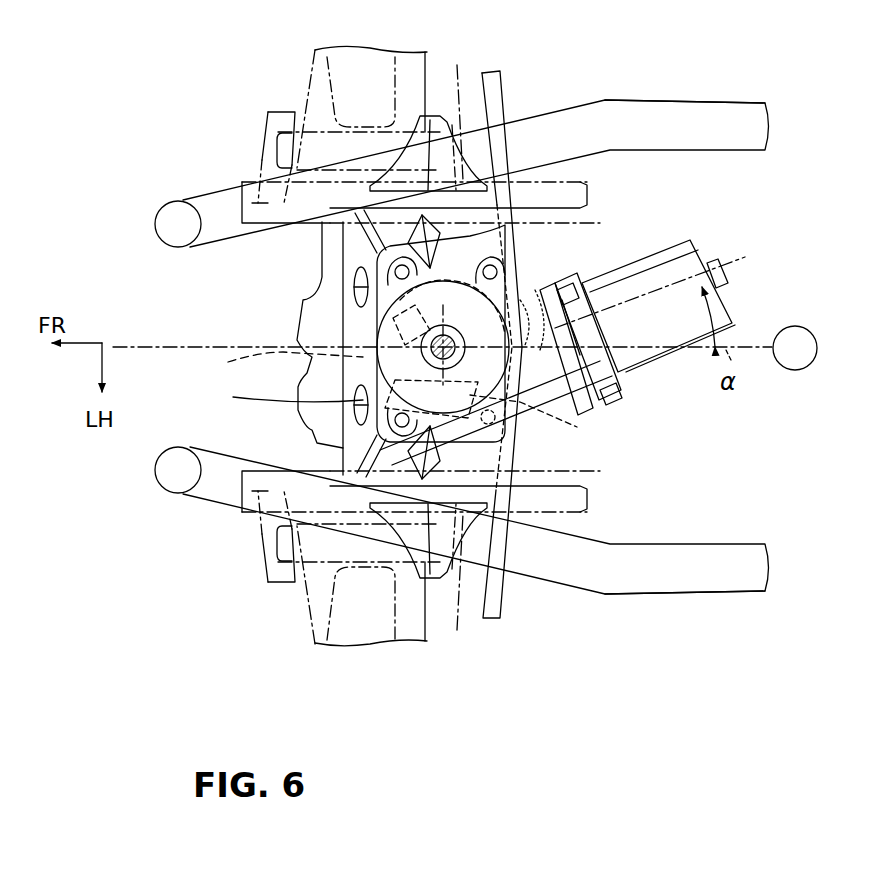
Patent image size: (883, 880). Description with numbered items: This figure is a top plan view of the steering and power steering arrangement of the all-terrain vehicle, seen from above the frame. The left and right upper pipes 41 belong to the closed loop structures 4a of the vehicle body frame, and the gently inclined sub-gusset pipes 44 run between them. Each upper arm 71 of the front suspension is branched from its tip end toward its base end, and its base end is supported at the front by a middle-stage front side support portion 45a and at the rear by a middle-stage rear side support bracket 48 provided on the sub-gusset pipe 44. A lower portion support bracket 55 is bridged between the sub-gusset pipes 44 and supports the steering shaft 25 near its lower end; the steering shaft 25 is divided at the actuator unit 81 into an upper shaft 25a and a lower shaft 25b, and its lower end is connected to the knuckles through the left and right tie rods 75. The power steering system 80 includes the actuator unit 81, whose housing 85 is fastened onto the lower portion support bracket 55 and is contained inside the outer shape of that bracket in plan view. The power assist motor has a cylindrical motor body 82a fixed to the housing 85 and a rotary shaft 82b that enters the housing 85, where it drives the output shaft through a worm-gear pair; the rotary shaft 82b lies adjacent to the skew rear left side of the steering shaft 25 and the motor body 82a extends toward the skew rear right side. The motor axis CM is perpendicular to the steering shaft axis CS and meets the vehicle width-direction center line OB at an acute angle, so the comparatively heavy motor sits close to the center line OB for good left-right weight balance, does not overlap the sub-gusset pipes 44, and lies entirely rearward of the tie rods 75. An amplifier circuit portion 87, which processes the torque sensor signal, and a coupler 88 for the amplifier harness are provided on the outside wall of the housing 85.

The closed loop structures 4a is at (690, 80).
The upper pipe 41 is at (626, 100).
The upper arm 71 is at (305, 78).
The middle-stage front side support portion 45a is at (266, 112).
The sub-gusset pipe 44 is at (582, 182).
The middle-stage rear side support bracket 48 is at (457, 66).
The tie rod 75 is at (503, 90).
The housing 85 is at (320, 318).
The coupler 88 is at (337, 285).
The amplifier circuit portion 87 is at (337, 438).
The lower portion support bracket 55 is at (323, 258).
The rotary shaft 82b is at (560, 403).
The axis of the steering shaft CS is at (413, 377).
The steering shaft 25 is at (183, 352).
The upper shaft 25a is at (273, 399).
The lower shaft 25b is at (273, 367).
The actuator unit 81 is at (577, 282).
The motor body 82a is at (668, 248).
The power steering system 80 is at (776, 236).
The center line of the power assist motor CM is at (745, 270).
The center line in the vehicle width direction OB is at (795, 348).